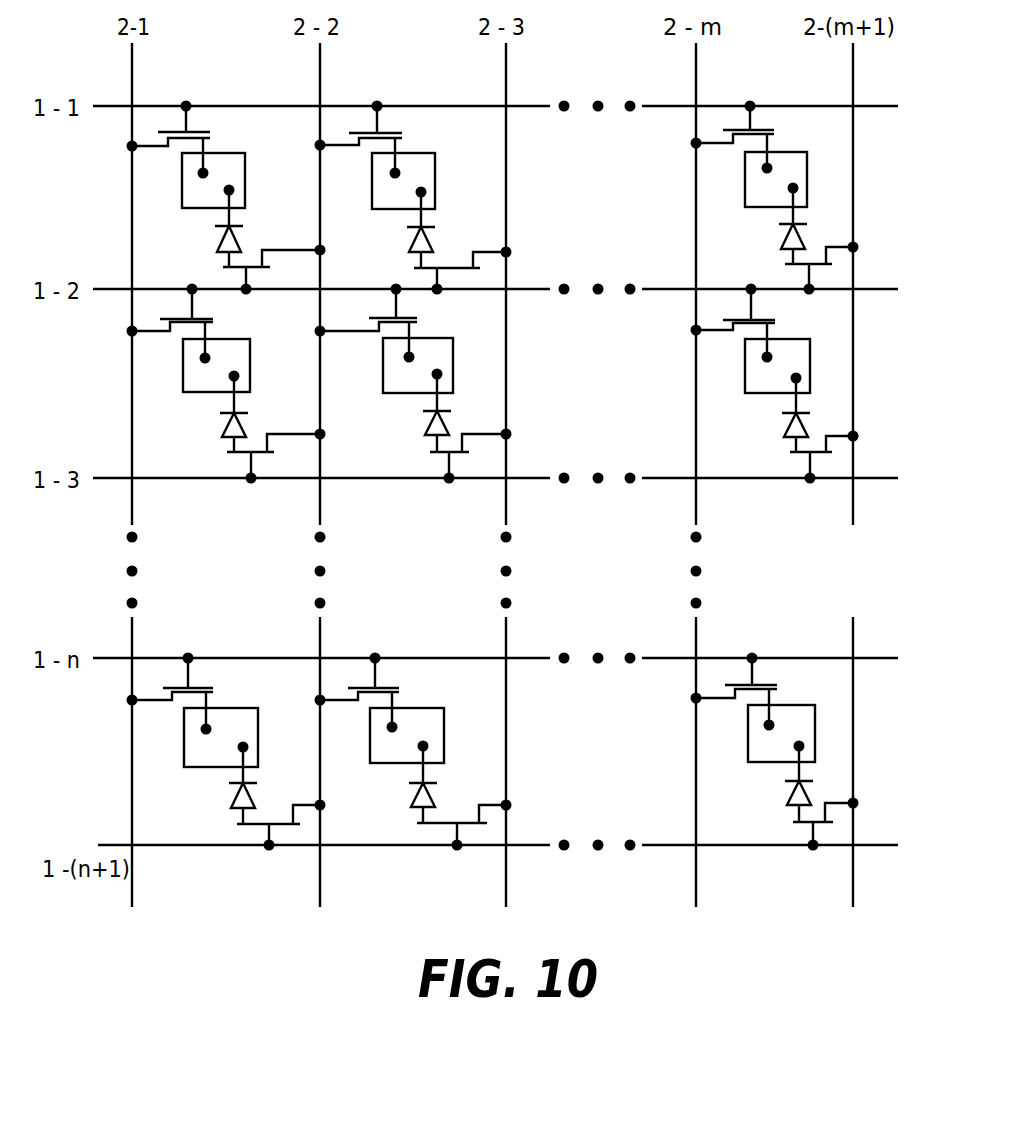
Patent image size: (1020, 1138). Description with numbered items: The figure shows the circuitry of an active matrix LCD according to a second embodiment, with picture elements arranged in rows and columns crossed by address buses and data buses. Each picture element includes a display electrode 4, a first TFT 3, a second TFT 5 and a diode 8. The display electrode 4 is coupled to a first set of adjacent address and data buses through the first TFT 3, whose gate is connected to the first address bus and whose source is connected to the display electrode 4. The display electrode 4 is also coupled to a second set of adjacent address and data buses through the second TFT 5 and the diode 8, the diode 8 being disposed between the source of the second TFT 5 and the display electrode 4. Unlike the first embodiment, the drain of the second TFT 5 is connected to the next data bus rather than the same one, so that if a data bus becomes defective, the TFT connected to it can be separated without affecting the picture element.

The first TFT 3 is at (760, 121).
The display electrode 4 is at (788, 178).
The diode 8 is at (780, 243).
The second TFT 5 is at (817, 266).